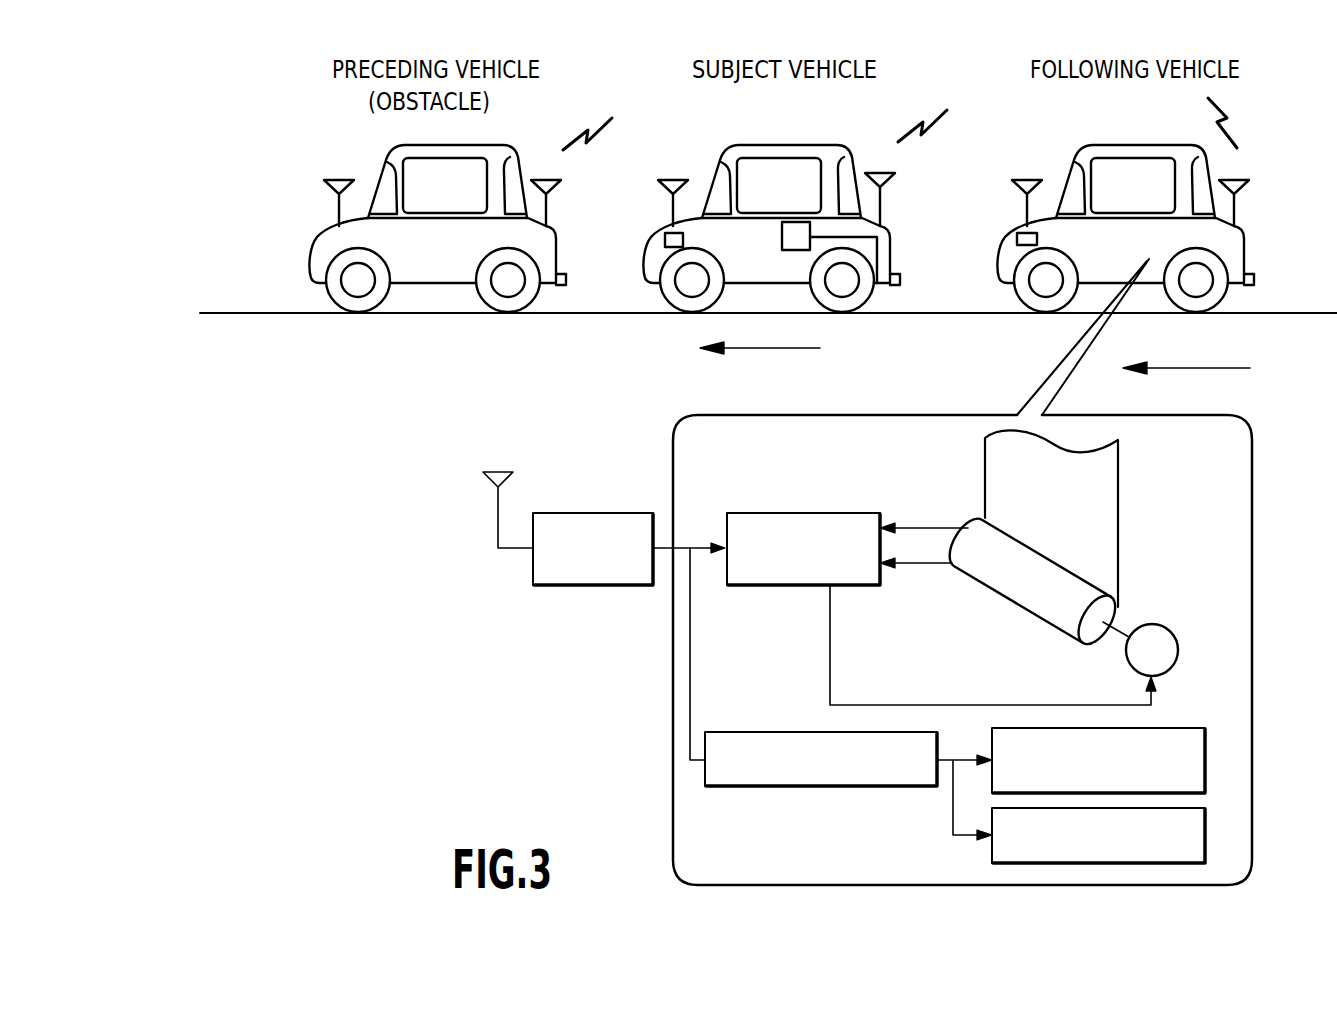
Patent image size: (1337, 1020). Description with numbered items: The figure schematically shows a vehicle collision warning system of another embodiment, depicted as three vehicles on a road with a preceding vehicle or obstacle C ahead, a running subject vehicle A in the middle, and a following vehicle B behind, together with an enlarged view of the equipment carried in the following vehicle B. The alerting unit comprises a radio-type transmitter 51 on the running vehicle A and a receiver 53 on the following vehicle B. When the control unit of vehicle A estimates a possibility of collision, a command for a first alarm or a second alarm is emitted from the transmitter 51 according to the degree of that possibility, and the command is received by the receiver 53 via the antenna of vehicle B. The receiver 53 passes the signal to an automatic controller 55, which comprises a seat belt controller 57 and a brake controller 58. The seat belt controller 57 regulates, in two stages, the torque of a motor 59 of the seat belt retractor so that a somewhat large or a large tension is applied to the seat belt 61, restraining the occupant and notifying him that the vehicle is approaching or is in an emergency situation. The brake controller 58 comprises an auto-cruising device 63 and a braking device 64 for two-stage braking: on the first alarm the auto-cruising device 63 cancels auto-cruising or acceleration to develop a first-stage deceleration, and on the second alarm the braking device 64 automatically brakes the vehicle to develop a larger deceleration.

The transmitter 51 is at (887, 205).
The receiver 53 is at (664, 232).
The automatic controller 55 is at (897, 415).
The seat belt controller 57 is at (793, 513).
The brake controller 58 is at (803, 732).
The motor 59 is at (1158, 630).
The seat belt 61 is at (1103, 483).
The auto-cruising device 63 is at (1168, 728).
The braking device 64 is at (992, 850).
The running vehicle A is at (834, 143).
The following vehicle B is at (1080, 145).
The preceding vehicle (obstacle) C is at (500, 143).